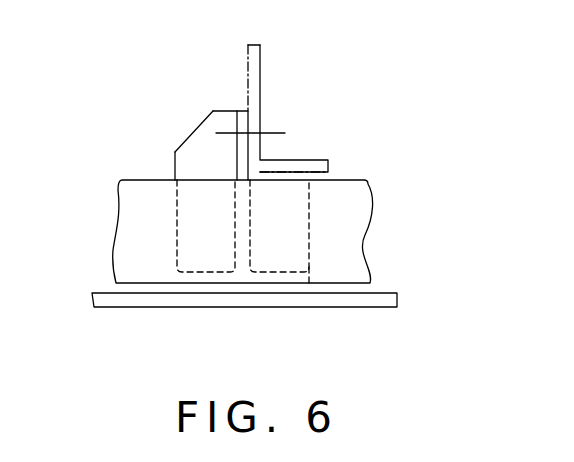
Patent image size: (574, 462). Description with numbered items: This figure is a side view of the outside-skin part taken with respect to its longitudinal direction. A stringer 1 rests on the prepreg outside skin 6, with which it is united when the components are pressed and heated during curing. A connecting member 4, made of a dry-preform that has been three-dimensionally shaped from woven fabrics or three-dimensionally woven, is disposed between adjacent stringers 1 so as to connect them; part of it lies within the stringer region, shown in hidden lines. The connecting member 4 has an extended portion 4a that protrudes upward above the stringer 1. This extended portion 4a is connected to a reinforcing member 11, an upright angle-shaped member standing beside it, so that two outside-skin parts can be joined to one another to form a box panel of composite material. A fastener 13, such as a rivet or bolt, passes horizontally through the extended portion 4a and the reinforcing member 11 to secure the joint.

The stringer 1 is at (145, 188).
The connecting member 4 is at (197, 197).
The extended portion 4a is at (200, 138).
The prepreg outside skin 6 is at (238, 302).
The reinforcing member 11 is at (258, 82).
The fastener 13 is at (270, 131).